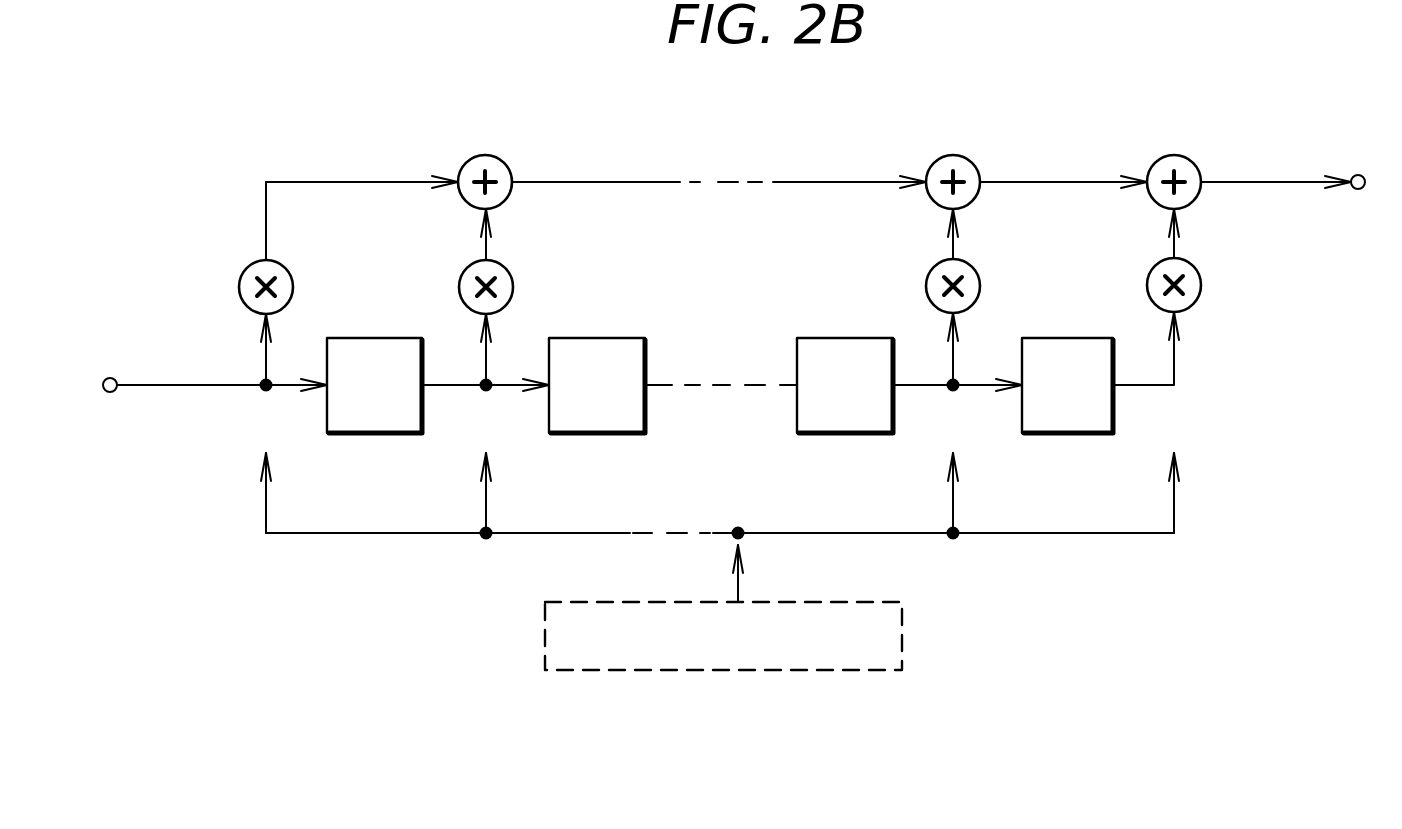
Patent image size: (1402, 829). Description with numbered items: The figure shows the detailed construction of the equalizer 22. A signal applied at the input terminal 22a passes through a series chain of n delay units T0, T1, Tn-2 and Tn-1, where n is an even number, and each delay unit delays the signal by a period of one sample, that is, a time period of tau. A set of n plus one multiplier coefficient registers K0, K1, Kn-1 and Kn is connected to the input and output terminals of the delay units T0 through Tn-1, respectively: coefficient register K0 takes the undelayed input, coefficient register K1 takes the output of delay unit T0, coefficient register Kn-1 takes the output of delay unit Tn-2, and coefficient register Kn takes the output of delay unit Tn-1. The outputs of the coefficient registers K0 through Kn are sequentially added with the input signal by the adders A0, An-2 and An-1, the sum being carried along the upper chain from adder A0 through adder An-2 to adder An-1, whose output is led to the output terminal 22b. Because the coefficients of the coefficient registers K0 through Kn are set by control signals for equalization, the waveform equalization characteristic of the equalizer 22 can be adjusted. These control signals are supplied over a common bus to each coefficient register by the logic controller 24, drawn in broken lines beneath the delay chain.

The equalizer 22 is at (868, 102).
The input terminal 22a is at (110, 378).
The output terminal 22b is at (1359, 174).
The logic controller 24 is at (723, 636).
The multiplier coefficient register K0 is at (284, 268).
The multiplier coefficient register K1 is at (504, 270).
The multiplier coefficient register Kn-1 is at (972, 266).
The multiplier coefficient register Kn is at (1194, 262).
The adder A0 is at (477, 158).
The adder An-2 is at (972, 160).
The adder An-1 is at (1168, 158).
The delay unit T0 is at (372, 338).
The delay unit T1 is at (578, 338).
The delay unit Tn-2 is at (826, 338).
The delay unit Tn-1 is at (1048, 338).